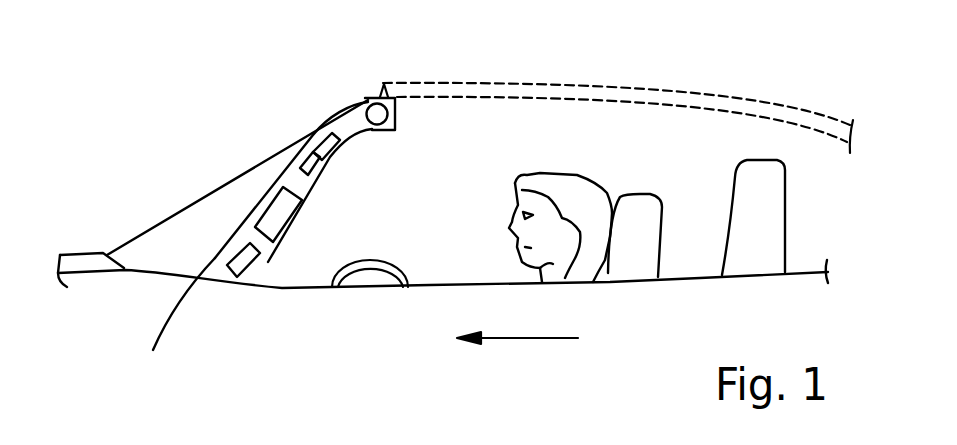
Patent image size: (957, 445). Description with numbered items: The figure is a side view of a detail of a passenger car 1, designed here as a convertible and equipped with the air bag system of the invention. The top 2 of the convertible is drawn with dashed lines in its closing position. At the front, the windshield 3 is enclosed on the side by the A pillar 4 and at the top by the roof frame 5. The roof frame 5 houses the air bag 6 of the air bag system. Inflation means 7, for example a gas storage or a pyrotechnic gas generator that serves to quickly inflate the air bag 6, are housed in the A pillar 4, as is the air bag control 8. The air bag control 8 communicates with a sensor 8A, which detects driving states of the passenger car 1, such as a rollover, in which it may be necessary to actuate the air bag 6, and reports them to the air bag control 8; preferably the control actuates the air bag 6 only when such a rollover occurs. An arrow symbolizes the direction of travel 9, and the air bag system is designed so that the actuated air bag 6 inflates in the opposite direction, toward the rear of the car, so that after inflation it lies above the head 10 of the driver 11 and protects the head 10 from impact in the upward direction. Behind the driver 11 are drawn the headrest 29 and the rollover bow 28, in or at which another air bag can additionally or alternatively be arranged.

The passenger car 1 is at (140, 84).
The top 2 is at (450, 85).
The windshield 3 is at (210, 187).
The A pillar 4 is at (268, 256).
The roof frame 5 is at (378, 132).
The air bag 6 is at (370, 97).
The inflation means 7 is at (310, 143).
The air bag control 8 is at (277, 215).
The sensor 8A is at (210, 287).
The direction of travel 9 is at (533, 340).
The head 10 is at (577, 198).
The driver 11 is at (493, 204).
The rollover bow 28 is at (765, 205).
The headrest 29 is at (640, 207).